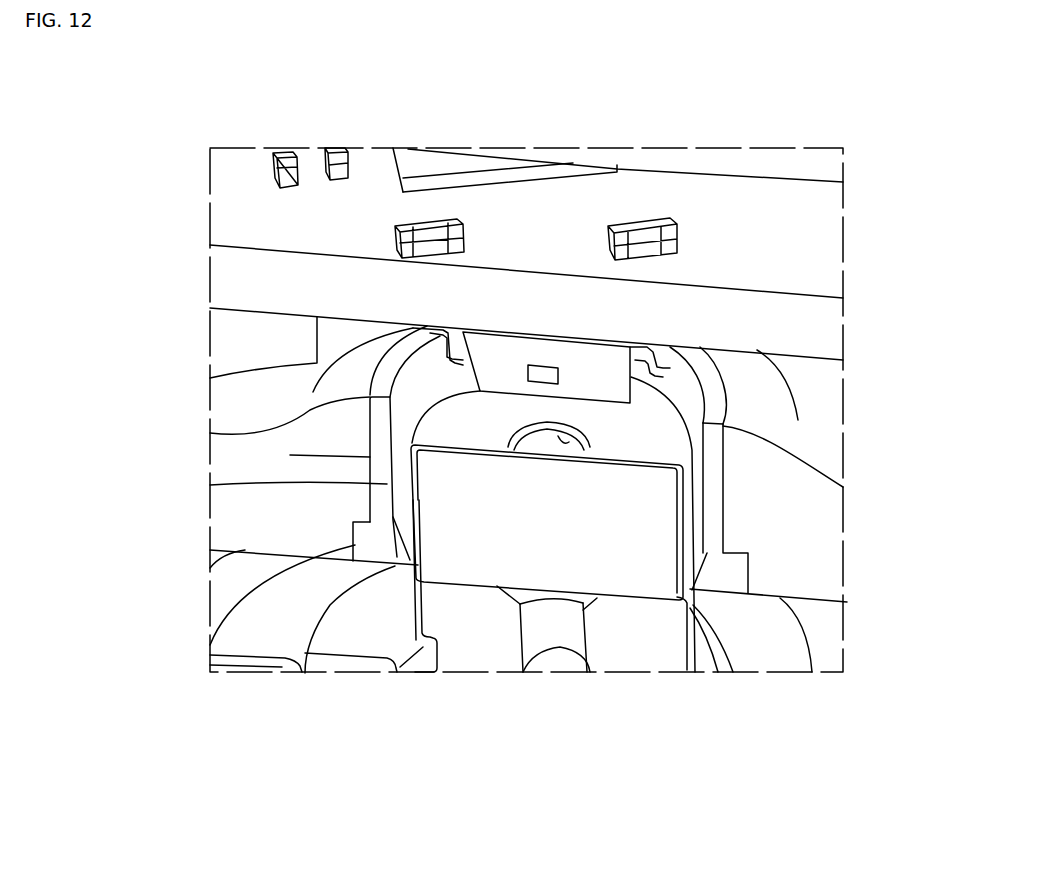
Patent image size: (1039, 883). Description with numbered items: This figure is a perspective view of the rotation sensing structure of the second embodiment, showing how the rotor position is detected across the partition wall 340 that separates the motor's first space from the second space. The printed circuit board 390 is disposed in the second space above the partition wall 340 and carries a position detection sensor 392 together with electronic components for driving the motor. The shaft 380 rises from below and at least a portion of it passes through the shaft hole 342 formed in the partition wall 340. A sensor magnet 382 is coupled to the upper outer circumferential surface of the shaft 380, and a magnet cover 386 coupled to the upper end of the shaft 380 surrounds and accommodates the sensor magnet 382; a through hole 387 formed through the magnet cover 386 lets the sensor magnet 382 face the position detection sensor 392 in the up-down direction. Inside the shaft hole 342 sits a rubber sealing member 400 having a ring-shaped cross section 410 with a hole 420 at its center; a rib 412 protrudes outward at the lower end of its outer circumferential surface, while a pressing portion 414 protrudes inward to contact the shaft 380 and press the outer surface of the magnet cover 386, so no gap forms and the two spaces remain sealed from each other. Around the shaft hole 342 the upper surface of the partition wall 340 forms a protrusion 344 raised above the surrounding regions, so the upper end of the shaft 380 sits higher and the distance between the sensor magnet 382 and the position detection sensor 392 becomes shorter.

The partition wall 340 is at (250, 411).
The shaft hole 342 is at (290, 455).
The protrusion 344 is at (353, 383).
The shaft 380 is at (633, 633).
The sensor magnet 382 is at (648, 533).
The magnet cover 386 is at (667, 437).
The through hole 387 is at (595, 441).
The printed circuit board 390 is at (783, 312).
The position detection sensor 392 is at (530, 350).
The sealing member 400 is at (730, 383).
The ring-shaped cross section 410 is at (380, 484).
The rib 412 is at (355, 537).
The pressing portion 414 is at (394, 552).
The hole 420 is at (429, 392).